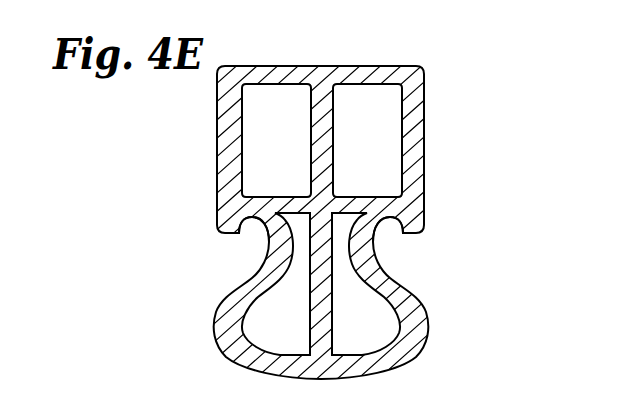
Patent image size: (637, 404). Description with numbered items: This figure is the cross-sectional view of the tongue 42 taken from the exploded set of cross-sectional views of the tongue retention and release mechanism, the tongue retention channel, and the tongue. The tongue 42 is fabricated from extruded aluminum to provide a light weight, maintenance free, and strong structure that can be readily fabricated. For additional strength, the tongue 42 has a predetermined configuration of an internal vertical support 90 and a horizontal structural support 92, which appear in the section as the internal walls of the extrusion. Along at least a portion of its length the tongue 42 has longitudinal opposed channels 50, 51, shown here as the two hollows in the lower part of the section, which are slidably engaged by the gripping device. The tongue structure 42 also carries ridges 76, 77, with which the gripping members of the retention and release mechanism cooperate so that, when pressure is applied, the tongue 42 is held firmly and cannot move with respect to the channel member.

The tongue 42 is at (367, 66).
The horizontal structural support 92 is at (286, 196).
The internal vertical support 90 is at (334, 161).
The longitudinal channel 51 is at (262, 263).
The longitudinal channel 50 is at (381, 266).
The ridge 77 is at (237, 232).
The ridge 76 is at (420, 236).